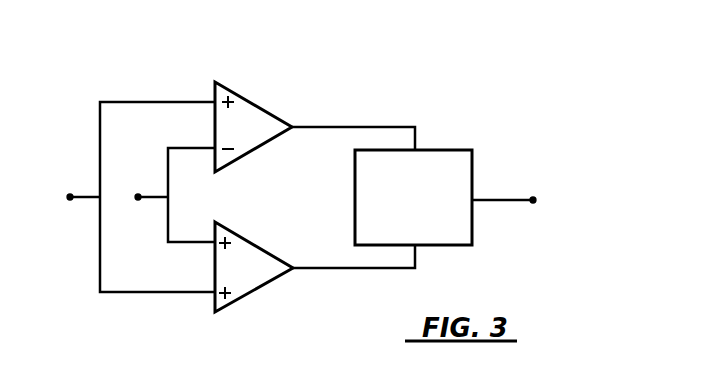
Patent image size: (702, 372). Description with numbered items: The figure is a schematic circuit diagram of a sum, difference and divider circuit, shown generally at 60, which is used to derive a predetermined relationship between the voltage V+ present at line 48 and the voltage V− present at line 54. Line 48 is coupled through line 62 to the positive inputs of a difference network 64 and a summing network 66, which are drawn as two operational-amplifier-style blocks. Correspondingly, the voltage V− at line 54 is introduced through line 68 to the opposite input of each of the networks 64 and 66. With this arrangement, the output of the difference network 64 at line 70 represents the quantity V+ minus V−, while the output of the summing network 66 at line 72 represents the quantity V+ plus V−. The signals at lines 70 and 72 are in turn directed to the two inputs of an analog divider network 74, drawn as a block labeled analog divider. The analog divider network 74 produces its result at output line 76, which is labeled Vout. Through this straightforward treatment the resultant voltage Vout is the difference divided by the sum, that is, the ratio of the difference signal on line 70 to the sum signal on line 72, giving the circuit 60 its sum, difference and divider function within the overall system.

The sum, difference and divider circuit 60 is at (362, 73).
The line carrying voltage V+ 48 is at (82, 201).
The line carrying voltage V− 54 is at (158, 201).
The line 62 is at (140, 102).
The line 68 is at (174, 144).
The difference network 64 is at (259, 105).
The summing network 66 is at (238, 300).
The output line of difference network 70 is at (326, 127).
The output line of summing network 72 is at (323, 241).
The analog divider network 74 is at (450, 149).
The output line 76 is at (500, 200).